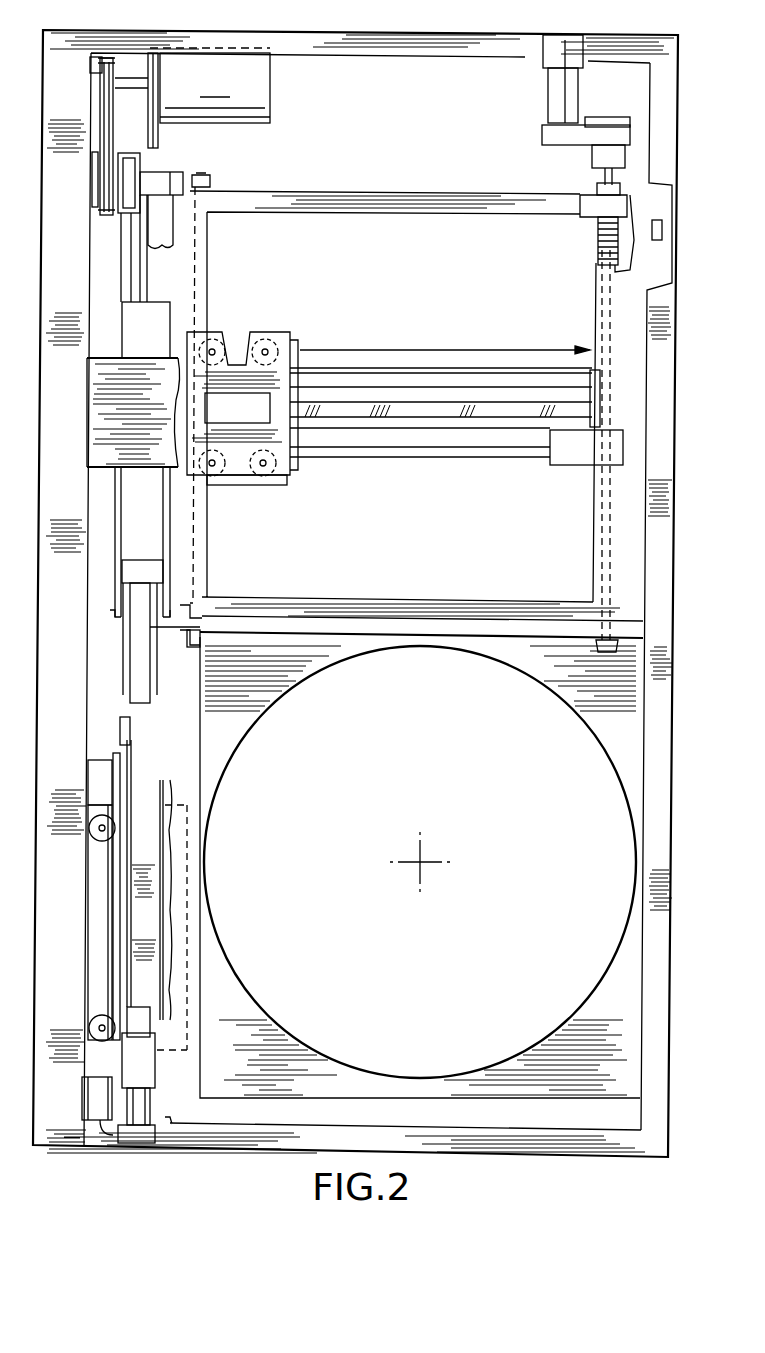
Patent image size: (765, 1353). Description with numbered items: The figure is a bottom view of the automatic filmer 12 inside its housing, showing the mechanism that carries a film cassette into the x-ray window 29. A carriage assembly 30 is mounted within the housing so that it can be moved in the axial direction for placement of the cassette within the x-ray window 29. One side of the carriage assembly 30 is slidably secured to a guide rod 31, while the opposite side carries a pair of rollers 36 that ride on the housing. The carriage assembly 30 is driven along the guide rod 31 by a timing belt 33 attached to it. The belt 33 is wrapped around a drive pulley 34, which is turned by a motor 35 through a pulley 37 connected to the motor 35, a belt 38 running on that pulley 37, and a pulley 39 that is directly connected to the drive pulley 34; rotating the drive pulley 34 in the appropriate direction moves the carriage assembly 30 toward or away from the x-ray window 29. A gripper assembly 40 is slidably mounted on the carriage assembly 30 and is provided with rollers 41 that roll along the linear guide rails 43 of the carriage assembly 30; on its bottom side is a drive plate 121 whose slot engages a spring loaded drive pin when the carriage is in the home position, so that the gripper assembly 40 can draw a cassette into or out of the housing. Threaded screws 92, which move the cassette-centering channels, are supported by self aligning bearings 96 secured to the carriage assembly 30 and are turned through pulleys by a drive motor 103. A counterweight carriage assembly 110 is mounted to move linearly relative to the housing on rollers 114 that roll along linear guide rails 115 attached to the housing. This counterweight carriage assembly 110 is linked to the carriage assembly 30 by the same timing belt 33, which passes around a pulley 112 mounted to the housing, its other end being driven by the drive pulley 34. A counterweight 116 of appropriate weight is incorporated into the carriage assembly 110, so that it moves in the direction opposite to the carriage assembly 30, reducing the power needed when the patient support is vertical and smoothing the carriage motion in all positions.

The automatic filmer 12 is at (680, 688).
The x-ray window 29 is at (412, 660).
The carriage assembly 30 is at (625, 572).
The guide rod 31 is at (167, 238).
The timing belt 33 is at (130, 260).
The drive pulley 34 is at (123, 218).
The motor 35 is at (262, 93).
The rollers 36 is at (673, 247).
The pulley 37 is at (136, 56).
The belt 38 is at (107, 120).
The pulley 39 is at (97, 177).
The gripper assembly 40 is at (262, 488).
The rollers 41 is at (234, 350).
The linear guide rails 43 is at (430, 367).
The threaded screws 92 is at (605, 247).
The self aligning bearings 96 is at (602, 187).
The drive motor 103 is at (552, 98).
The counterweight carriage assembly 110 is at (98, 800).
The pulley 112 is at (102, 1100).
The rollers 114 is at (98, 838).
The linear guide rails 115 is at (110, 927).
The counterweight 116 is at (98, 970).
The drive plate 121 is at (290, 335).